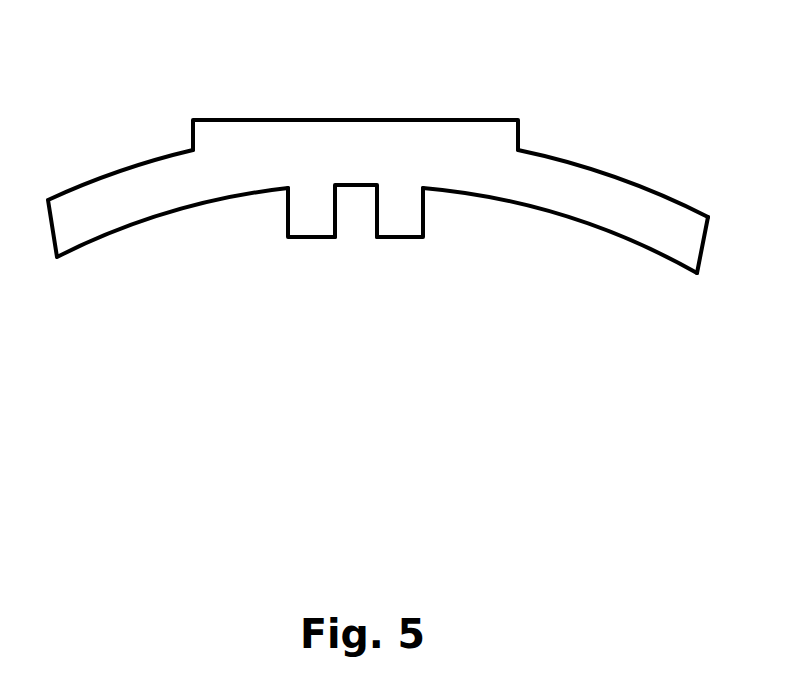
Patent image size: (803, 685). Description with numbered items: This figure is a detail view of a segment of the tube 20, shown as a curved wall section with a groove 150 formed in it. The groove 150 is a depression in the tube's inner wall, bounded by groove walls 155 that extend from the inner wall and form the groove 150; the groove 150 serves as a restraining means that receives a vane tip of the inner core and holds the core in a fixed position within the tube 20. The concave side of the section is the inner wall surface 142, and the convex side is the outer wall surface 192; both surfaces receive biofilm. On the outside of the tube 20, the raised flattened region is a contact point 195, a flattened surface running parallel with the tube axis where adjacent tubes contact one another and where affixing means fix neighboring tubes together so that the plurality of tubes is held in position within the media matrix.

The tube 20 is at (387, 118).
The contact point 195 is at (488, 118).
The outer wall surface 192 is at (568, 158).
The inner wall surface 142 is at (507, 197).
The groove 150 is at (357, 200).
The groove walls 155 is at (337, 217).